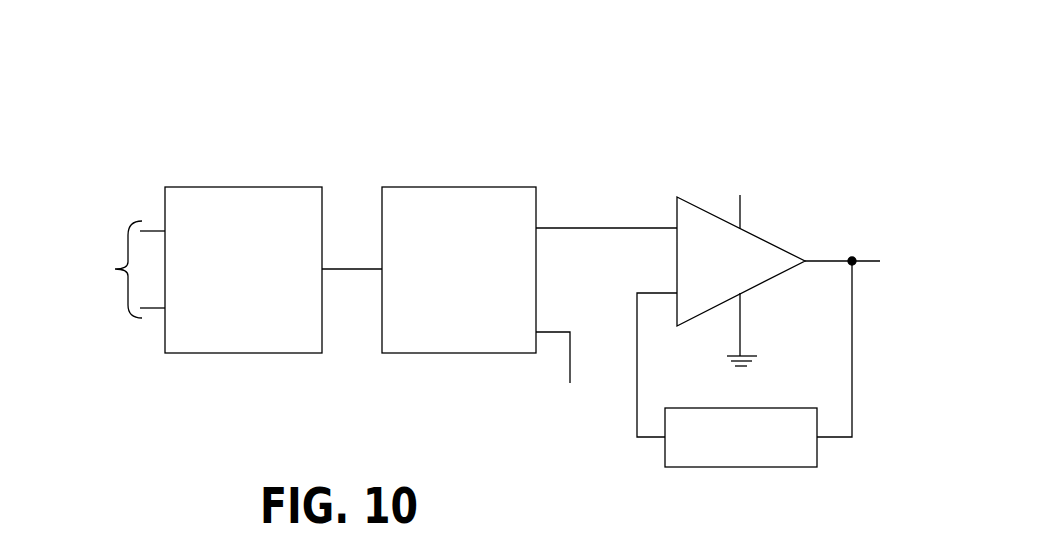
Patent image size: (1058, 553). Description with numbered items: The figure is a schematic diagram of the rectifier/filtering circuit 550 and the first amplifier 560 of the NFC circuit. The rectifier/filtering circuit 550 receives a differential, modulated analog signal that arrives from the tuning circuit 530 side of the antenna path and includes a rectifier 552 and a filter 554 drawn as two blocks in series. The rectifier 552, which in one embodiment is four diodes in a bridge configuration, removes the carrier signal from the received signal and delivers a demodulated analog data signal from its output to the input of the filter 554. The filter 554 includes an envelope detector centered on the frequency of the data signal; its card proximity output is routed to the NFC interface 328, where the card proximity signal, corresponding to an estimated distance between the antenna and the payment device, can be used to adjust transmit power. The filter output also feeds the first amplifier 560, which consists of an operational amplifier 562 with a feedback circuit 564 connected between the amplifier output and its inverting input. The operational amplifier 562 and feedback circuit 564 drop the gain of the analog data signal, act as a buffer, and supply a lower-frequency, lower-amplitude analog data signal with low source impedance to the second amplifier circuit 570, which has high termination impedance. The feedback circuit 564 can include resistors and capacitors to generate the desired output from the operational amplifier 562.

The NFC interface 328 is at (568, 397).
The tuning circuit 530 is at (104, 271).
The rectifier/filtering circuit 550 is at (329, 110).
The rectifier 552 is at (193, 187).
The filter 554 is at (485, 187).
The first amplifier 560 is at (743, 108).
The operational amplifier 562 is at (767, 240).
The feedback circuit 564 is at (710, 468).
The second amplifier circuit 570 is at (883, 260).